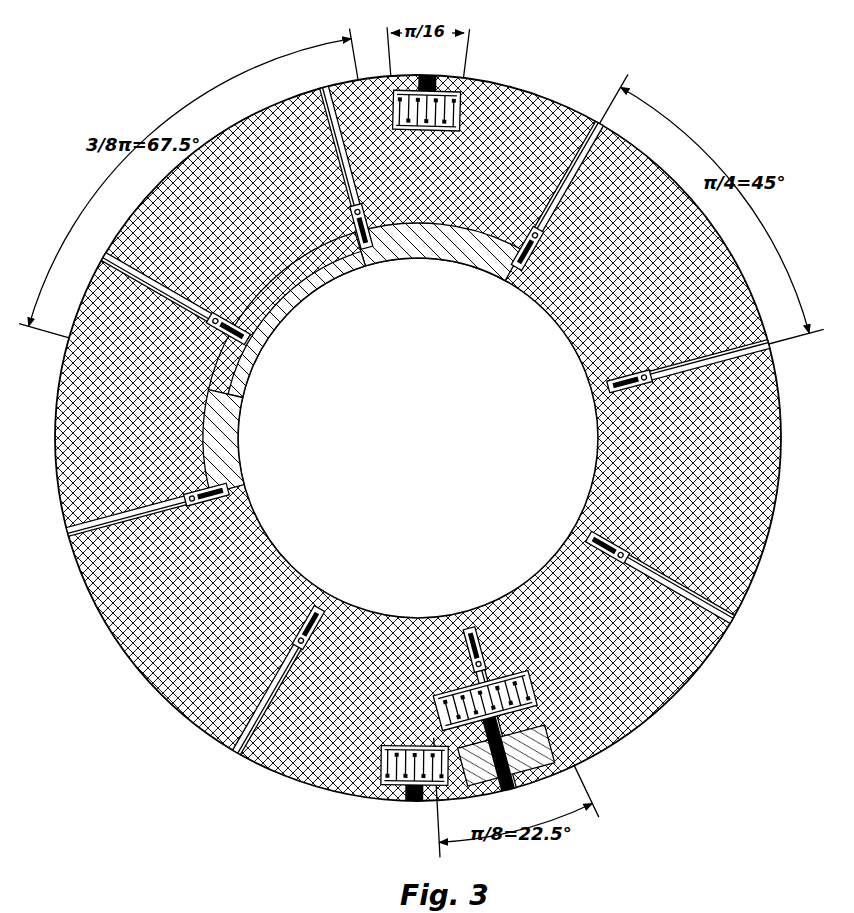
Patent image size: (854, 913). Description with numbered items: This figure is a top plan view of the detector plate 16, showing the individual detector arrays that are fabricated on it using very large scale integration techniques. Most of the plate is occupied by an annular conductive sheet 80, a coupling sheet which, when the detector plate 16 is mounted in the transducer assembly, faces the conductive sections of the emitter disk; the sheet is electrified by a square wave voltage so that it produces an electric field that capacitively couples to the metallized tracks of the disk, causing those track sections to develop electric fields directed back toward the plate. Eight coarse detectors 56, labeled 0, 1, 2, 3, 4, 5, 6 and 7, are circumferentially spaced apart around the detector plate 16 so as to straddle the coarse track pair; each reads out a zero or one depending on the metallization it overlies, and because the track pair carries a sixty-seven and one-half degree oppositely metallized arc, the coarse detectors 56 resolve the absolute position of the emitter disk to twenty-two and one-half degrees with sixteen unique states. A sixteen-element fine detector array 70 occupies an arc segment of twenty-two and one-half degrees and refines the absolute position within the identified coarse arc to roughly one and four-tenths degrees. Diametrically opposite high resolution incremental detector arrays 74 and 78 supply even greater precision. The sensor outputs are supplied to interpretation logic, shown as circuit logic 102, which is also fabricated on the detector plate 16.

The coarse detector 0 is at (462, 622).
The coarse detector 1 is at (597, 547).
The coarse detector 2 is at (598, 377).
The coarse detector 3 is at (500, 270).
The coarse detector 4 is at (356, 250).
The coarse detector 5 is at (260, 344).
The coarse detector 6 is at (238, 471).
The coarse detector 7 is at (310, 606).
The detector plate 16 is at (754, 571).
The coarse detectors 56 is at (622, 380).
The fine detector array 70 is at (540, 678).
The high resolution incremental detector array 74 is at (375, 779).
The high resolution incremental detector array 78 is at (452, 100).
The annular conductive sheet 80 is at (170, 622).
The circuit logic 102 is at (560, 754).